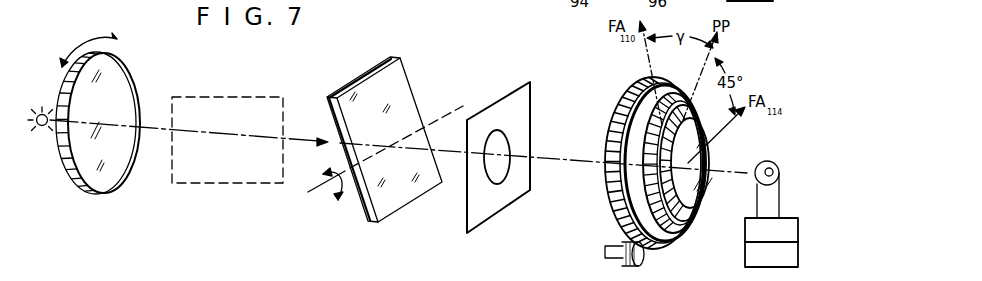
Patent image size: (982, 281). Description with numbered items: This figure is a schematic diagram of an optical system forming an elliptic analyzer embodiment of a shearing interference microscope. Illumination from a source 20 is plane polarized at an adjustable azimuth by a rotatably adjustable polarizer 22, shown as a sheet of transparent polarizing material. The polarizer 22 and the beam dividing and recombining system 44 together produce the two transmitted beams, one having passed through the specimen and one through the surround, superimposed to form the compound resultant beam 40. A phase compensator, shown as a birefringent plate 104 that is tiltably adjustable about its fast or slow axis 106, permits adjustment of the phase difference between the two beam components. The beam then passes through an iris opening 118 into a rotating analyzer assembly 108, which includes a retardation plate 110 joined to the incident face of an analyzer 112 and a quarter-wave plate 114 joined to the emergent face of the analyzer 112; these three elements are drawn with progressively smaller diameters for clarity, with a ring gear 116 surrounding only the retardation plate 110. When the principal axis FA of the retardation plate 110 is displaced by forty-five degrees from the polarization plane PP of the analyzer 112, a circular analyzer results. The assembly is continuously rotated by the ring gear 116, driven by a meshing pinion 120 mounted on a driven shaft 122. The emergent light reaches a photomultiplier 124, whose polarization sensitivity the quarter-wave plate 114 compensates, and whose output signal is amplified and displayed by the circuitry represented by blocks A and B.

The source 20 is at (42, 127).
The rotatably adjustable polarizer 22 is at (113, 173).
The compound resultant beam 40 is at (296, 137).
The system 44 is at (237, 186).
The birefringent plate 104 is at (362, 92).
The fast or slow axis 106 is at (323, 191).
The rotating analyzer assembly 108 is at (598, 221).
The retardation plate 110 is at (645, 117).
The analyzer 112 is at (672, 218).
The quarter-wave plate 114 is at (703, 160).
The ring gear 116 is at (616, 133).
The iris opening 118 is at (487, 182).
The pinion 120 is at (644, 257).
The driven shaft 122 is at (603, 250).
The photomultiplier 124 is at (768, 161).